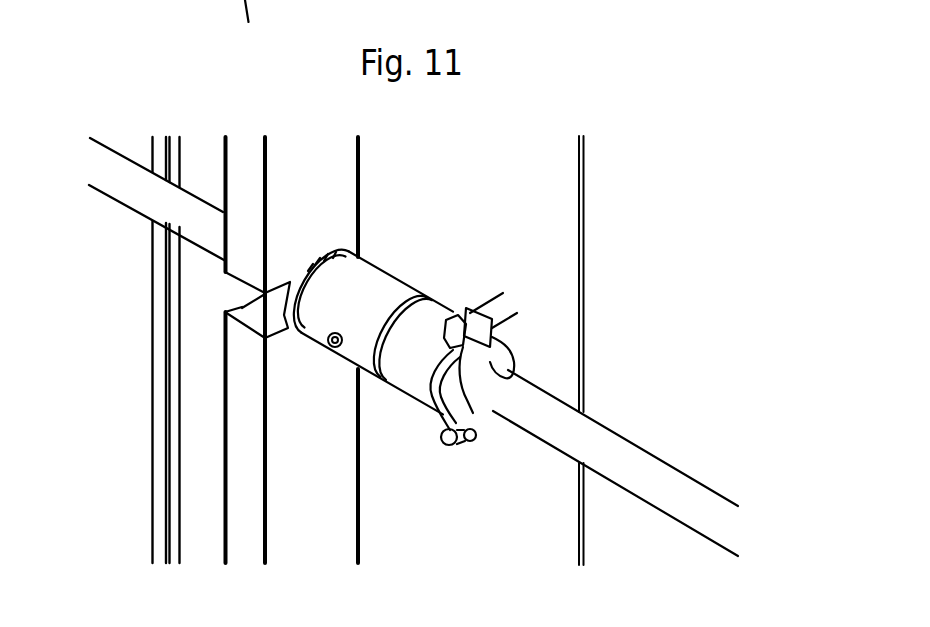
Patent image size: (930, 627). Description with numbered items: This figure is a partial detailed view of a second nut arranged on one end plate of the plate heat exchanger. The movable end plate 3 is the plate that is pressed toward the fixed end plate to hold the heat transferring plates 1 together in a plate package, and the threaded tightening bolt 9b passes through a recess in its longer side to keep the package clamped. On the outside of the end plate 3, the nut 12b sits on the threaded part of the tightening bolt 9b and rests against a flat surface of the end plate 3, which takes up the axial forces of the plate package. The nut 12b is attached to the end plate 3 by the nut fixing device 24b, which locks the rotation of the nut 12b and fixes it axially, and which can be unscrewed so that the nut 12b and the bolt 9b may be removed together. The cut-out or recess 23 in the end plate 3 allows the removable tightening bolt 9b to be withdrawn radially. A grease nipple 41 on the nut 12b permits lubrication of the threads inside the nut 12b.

The heat transferring plates 1 is at (183, 328).
The movable end plate 3 is at (238, 133).
The cut-out or recess 23 is at (243, 308).
The nut 12b is at (387, 277).
The grease nipple 41 is at (334, 348).
The nut fixing device 24b is at (473, 313).
The tightening bolt 9b is at (615, 461).